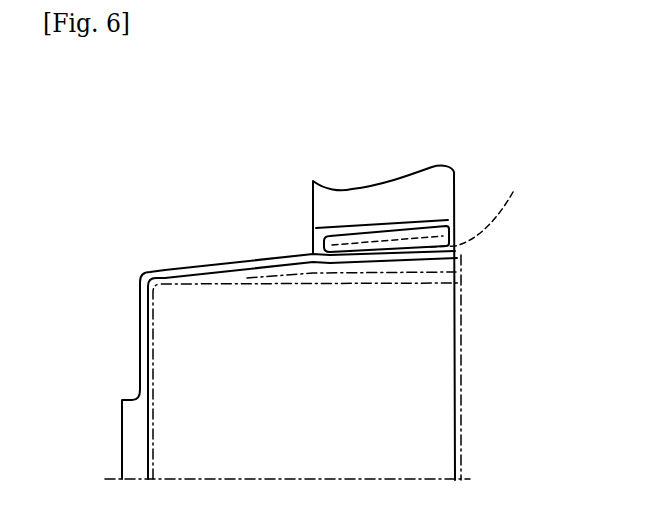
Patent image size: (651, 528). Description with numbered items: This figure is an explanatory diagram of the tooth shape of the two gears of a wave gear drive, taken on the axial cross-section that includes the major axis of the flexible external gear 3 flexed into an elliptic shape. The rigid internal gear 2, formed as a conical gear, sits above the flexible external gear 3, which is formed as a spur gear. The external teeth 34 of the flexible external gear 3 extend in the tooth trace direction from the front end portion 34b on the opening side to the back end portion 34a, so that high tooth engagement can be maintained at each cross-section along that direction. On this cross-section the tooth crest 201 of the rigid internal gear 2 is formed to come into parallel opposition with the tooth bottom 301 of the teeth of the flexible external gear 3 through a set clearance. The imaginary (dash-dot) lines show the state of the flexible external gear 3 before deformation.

The rigid internal gear 2 is at (300, 208).
The flexible external gear 3 is at (268, 248).
The external teeth 34 is at (392, 250).
The back end portion 34a is at (328, 250).
The front end portion 34b is at (452, 240).
The tooth bottom 301 is at (400, 223).
The tooth crest 201 is at (488, 199).